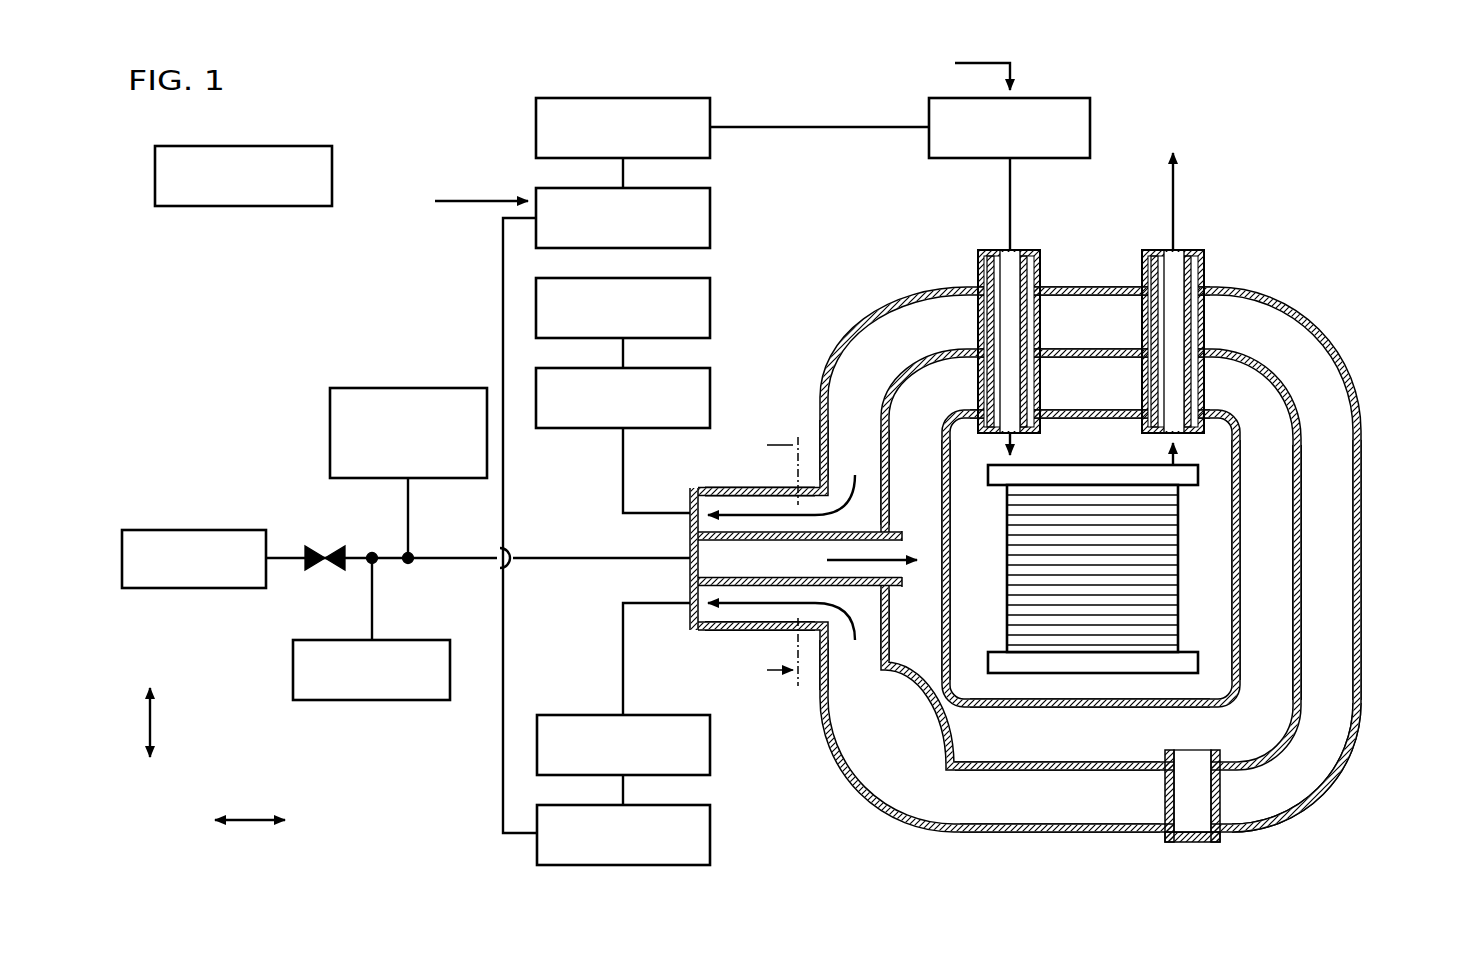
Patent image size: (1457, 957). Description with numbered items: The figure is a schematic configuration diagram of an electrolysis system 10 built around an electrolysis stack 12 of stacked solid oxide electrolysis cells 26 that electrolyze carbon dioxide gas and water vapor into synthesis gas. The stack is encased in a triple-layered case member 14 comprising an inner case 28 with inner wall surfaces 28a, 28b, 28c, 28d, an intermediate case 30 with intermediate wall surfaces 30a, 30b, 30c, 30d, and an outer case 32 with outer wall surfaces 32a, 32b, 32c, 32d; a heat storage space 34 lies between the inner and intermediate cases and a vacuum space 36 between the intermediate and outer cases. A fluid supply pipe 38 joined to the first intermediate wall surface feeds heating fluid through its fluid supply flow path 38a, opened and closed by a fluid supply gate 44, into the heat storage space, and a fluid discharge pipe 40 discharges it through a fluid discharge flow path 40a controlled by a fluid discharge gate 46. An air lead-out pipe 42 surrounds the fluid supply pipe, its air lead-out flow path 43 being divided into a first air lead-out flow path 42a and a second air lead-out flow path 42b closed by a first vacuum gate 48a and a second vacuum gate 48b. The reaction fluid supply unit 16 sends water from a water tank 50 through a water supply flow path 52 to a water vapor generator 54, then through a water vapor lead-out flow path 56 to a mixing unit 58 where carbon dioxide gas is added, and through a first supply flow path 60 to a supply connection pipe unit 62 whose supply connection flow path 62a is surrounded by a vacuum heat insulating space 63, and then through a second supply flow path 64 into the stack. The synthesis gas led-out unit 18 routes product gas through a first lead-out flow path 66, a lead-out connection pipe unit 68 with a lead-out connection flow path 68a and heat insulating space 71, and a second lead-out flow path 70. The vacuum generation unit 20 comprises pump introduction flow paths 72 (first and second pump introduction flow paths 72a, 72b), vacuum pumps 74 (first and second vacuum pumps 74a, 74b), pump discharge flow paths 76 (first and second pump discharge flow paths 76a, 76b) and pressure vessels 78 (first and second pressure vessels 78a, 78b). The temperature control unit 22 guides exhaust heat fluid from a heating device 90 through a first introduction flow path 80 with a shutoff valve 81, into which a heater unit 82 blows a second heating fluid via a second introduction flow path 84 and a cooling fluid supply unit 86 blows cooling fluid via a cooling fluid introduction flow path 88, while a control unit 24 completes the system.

The electrolysis system 10 is at (1336, 101).
The electrolysis stack 12 is at (1200, 528).
The case member 14 is at (1027, 497).
The reaction fluid supply unit 16 is at (564, 168).
The synthesis gas led-out unit 18 is at (1200, 291).
The vacuum generation unit 20 is at (673, 543).
The temperature control unit 22 is at (406, 547).
The control unit 24 is at (300, 206).
The electrolysis cell 26 is at (1170, 525).
The inner case 28 is at (1161, 563).
The first inner wall surface 28a is at (940, 632).
The second inner wall surface 28b is at (1241, 600).
The third inner wall surface 28c is at (1108, 409).
The fourth inner wall surface 28d is at (990, 712).
The intermediate case 30 is at (1132, 597).
The first intermediate wall surface 30a is at (883, 667).
The second intermediate wall surface 30b is at (1299, 458).
The third intermediate wall surface 30c is at (1108, 349).
The fourth intermediate wall surface 30d is at (983, 771).
The outer case 32 is at (1063, 566).
The first outer wall surface 32a is at (819, 676).
The second outer wall surface 32b is at (1362, 640).
The third outer wall surface 32c is at (1108, 287).
The fourth outer wall surface 32d is at (1035, 832).
The heat storage space 34 is at (1268, 668).
The vacuum space 36 is at (1299, 770).
The fluid supply pipe 38 is at (771, 513).
The fluid supply flow path 38a is at (717, 566).
The fluid discharge pipe 40 is at (1198, 814).
The fluid discharge flow path 40a is at (1188, 820).
The air lead-out pipe 42 is at (744, 587).
The first air lead-out flow path 42a is at (744, 473).
The second air lead-out flow path 42b is at (748, 652).
The air lead-out flow path 43 is at (752, 631).
The fluid supply gate 44 is at (688, 545).
The fluid discharge gate 46 is at (1200, 830).
The first vacuum gate 48a is at (690, 503).
The second vacuum gate 48b is at (690, 612).
The water tank 50 is at (710, 203).
The water supply flow path 52 is at (623, 178).
The water vapor generator 54 is at (710, 113).
The water vapor lead-out flow path 56 is at (830, 130).
The mixing unit 58 is at (1063, 97).
The first supply flow path 60 is at (1008, 203).
The supply connection pipe unit 62 is at (997, 355).
The supply connection flow path 62a is at (1007, 375).
The vacuum heat insulating space 63 is at (988, 325).
The second supply flow path 64 is at (1020, 448).
The first lead-out flow path 66 is at (1170, 447).
The lead-out connection pipe unit 68 is at (1187, 355).
The lead-out connection flow path 68a is at (1173, 375).
The second lead-out flow path 70 is at (1175, 203).
The vacuum heat insulating space 71 is at (1192, 322).
The suction pipes 72 is at (623, 571).
The first pump introduction flow path 72a is at (621, 473).
The second pump introduction flow path 72b is at (622, 624).
The vacuum pump 74 is at (669, 569).
The first vacuum pump 74a is at (710, 380).
The second vacuum pump 74b is at (598, 713).
The exhaust pipes 76 is at (628, 570).
The first pump discharge flow path 76a is at (623, 355).
The second pump discharge flow path 76b is at (622, 792).
The pressure vessel 78 is at (680, 571).
The first pressure vessel 78a is at (710, 296).
The second pressure vessel 78b is at (710, 830).
The first introduction flow path 80 is at (287, 560).
The shutoff valve 81 is at (312, 548).
The heater unit 82 is at (405, 700).
The second introduction flow path 84 is at (372, 600).
The cooling fluid supply unit 86 is at (378, 388).
The cooling fluid introduction flow path 88 is at (408, 512).
The heating device 90 is at (200, 530).